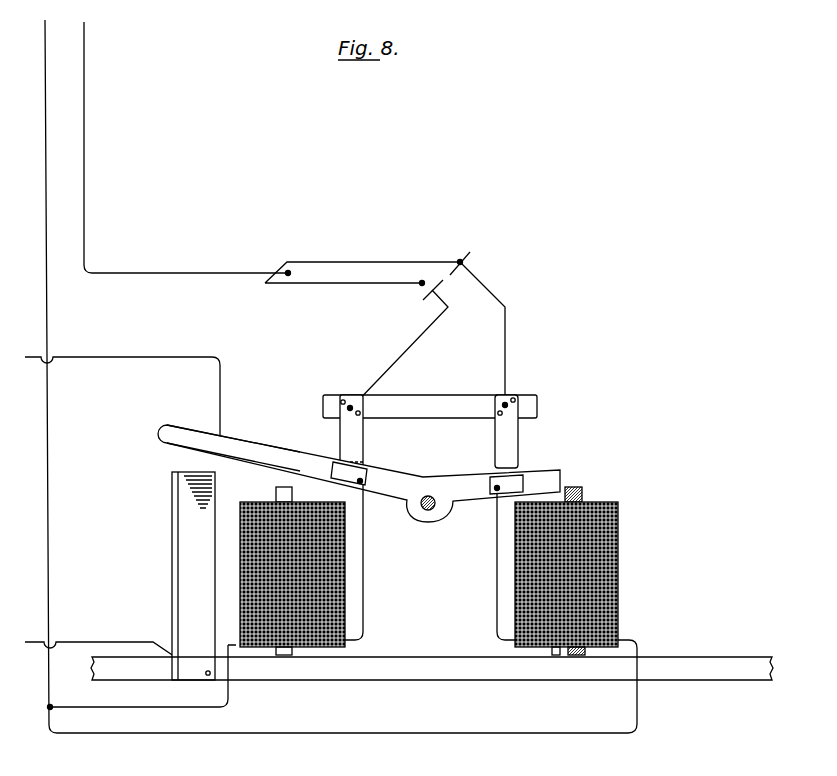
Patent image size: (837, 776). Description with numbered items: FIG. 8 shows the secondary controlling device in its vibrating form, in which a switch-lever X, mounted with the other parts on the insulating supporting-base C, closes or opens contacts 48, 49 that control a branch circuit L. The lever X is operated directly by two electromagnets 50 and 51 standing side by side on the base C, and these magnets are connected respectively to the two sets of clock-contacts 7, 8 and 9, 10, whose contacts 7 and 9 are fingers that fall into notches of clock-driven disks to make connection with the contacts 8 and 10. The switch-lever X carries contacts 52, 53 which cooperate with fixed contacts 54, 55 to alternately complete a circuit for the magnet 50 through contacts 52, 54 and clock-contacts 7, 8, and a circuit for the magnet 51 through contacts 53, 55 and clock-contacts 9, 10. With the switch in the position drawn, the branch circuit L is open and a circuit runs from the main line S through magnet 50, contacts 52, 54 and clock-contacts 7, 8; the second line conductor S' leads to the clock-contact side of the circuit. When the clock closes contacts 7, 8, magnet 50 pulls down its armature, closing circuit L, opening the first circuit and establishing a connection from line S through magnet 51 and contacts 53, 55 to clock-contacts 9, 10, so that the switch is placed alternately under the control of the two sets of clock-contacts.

The main line S is at (330, 376).
The line wire S' is at (187, 149).
The branch circuit L is at (100, 358).
The contact 7 is at (402, 345).
The contact 8 is at (362, 274).
The contact 9 is at (484, 331).
The contact 10 is at (454, 258).
The contact 48 is at (193, 576).
The contact 49 is at (195, 437).
The electromagnet 50 is at (345, 591).
The electromagnet 51 is at (515, 590).
The contact 52 is at (362, 485).
The contact 53 is at (497, 490).
The fixed contact 54 is at (363, 457).
The fixed contact 55 is at (520, 457).
The switch-lever X is at (419, 523).
The supporting-base C is at (432, 668).